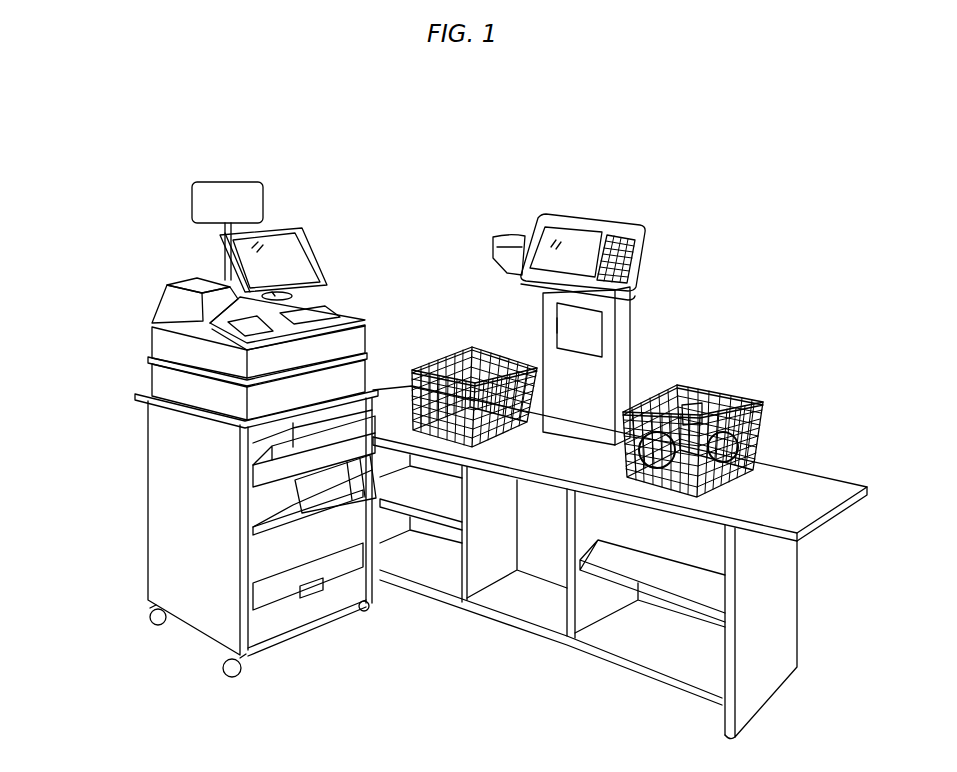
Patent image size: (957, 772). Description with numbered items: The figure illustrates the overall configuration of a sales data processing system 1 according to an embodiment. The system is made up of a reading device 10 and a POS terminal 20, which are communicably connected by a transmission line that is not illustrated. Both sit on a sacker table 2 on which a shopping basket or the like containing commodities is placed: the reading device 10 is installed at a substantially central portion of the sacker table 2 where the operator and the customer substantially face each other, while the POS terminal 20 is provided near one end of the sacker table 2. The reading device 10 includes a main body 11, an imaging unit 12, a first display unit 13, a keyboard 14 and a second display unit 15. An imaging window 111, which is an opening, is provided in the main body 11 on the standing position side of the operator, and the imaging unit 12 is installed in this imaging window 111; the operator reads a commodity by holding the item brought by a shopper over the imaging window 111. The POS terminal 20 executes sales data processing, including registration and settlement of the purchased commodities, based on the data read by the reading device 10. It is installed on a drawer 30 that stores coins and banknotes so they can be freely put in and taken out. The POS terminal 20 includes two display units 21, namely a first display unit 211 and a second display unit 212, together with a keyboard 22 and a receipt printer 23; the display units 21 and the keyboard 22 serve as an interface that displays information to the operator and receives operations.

The sales data processing system 1 is at (116, 126).
The sacker table 2 is at (826, 496).
The reading device 10 is at (618, 324).
The main body 11 is at (630, 368).
The imaging unit 12 is at (588, 333).
The imaging window 111 is at (557, 325).
The first display unit 13 is at (556, 226).
The keyboard 14 is at (616, 248).
The second display unit 15 is at (508, 242).
The POS terminal 20 is at (160, 340).
The display units 21 is at (373, 140).
The keyboard 22 is at (322, 314).
The receipt printer 23 is at (197, 285).
The drawer 30 is at (160, 378).
The first display unit 211 is at (288, 246).
The second display unit 212 is at (265, 198).